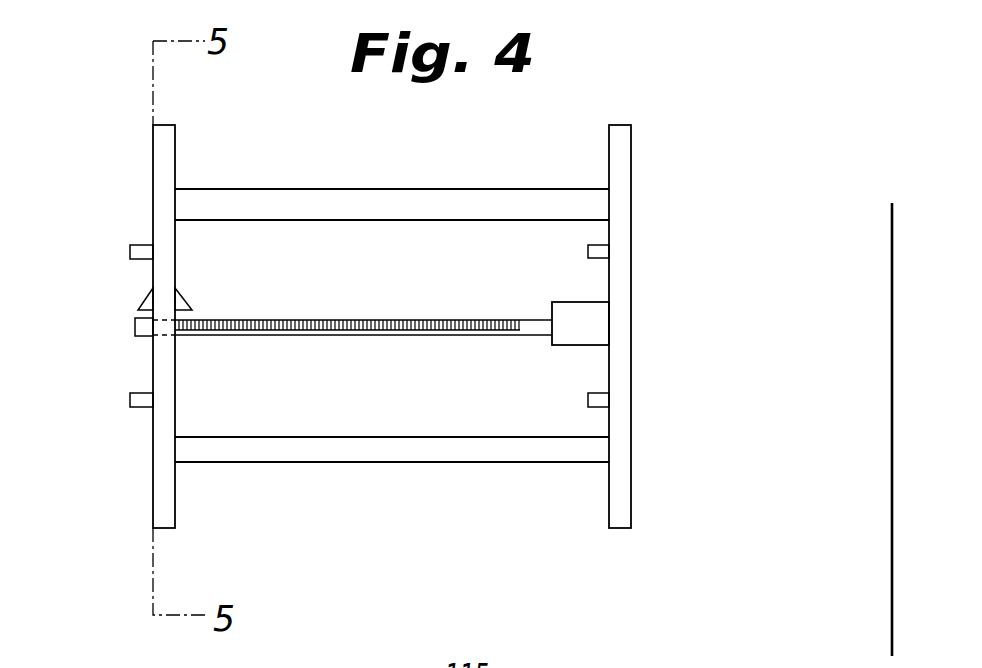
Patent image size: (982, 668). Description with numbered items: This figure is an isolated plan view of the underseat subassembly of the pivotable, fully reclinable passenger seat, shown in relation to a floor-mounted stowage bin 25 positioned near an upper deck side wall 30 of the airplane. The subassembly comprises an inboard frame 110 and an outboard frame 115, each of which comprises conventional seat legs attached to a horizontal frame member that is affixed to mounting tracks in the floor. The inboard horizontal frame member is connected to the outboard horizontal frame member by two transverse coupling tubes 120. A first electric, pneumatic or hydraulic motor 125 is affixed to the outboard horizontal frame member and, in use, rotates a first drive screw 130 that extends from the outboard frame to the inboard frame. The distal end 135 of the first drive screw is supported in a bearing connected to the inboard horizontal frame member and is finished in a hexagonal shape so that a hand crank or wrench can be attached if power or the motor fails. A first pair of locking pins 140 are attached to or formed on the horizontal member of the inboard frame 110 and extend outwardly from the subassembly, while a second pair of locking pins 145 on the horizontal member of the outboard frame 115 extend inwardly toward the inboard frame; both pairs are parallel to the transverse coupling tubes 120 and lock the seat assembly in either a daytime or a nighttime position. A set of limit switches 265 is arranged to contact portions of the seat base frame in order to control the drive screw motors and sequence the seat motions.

The floor-mounted stowage bins 25 is at (736, 266).
The upper deck side walls 30 is at (885, 455).
The inboard frame 110 is at (149, 453).
The outboard frame 115 is at (634, 152).
The transverse coupling tubes 120 is at (457, 187).
The first motor 125 is at (592, 321).
The first drive screw 130 is at (460, 339).
The distal end of the first drive screw 135 is at (133, 339).
The first pair of locking pins 140 is at (128, 251).
The second pair of locking pins 145 is at (586, 255).
The limit switches 265 is at (145, 296).